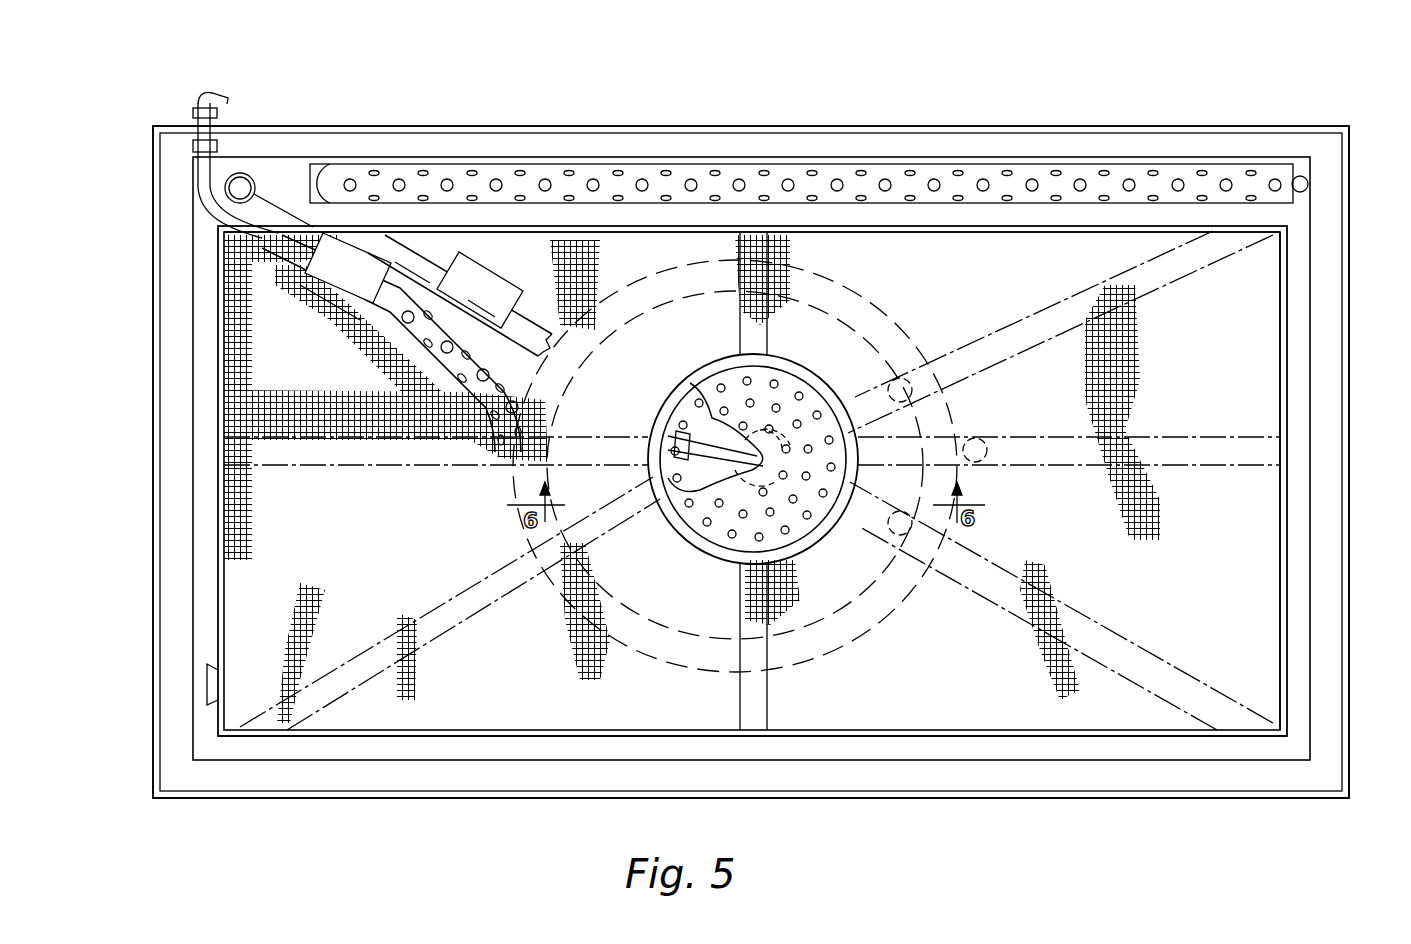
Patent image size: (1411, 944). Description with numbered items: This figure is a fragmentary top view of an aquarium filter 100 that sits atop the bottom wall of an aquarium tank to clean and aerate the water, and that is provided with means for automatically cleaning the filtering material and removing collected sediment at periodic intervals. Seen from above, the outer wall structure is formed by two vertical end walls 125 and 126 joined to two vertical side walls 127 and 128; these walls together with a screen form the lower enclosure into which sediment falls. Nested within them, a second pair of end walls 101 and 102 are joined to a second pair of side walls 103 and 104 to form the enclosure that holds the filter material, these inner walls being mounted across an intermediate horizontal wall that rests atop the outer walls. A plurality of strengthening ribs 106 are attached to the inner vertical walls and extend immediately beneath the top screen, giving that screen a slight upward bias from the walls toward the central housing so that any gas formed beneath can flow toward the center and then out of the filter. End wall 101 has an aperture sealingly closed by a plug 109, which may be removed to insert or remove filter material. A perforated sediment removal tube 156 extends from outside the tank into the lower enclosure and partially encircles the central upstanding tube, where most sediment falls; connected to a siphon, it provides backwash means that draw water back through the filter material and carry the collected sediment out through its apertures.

The filter 100 is at (1258, 86).
The end wall 101 is at (216, 435).
The end wall 102 is at (1284, 455).
The side wall 103 is at (1140, 736).
The side wall 104 is at (943, 227).
The strengthening ribs 106 is at (467, 607).
The plug 109 is at (207, 689).
The end wall 125 is at (155, 470).
The end wall 126 is at (1350, 742).
The side wall 127 is at (450, 800).
The side wall 128 is at (600, 125).
The sediment removal tube 156 is at (256, 180).